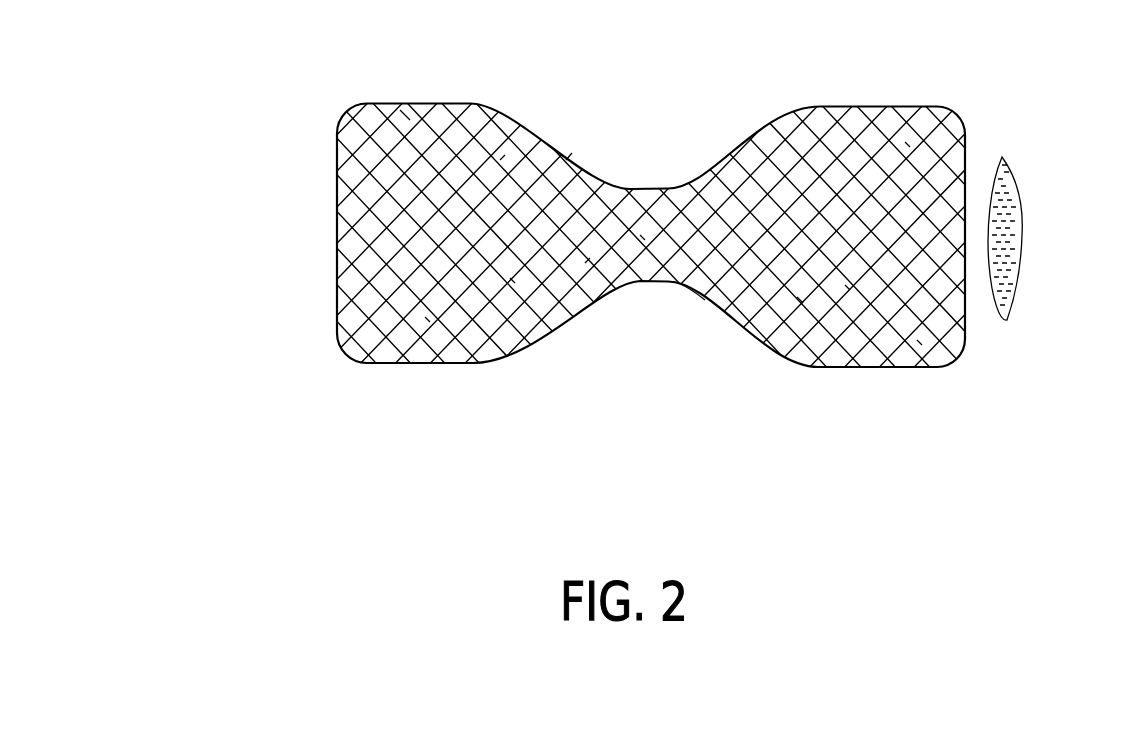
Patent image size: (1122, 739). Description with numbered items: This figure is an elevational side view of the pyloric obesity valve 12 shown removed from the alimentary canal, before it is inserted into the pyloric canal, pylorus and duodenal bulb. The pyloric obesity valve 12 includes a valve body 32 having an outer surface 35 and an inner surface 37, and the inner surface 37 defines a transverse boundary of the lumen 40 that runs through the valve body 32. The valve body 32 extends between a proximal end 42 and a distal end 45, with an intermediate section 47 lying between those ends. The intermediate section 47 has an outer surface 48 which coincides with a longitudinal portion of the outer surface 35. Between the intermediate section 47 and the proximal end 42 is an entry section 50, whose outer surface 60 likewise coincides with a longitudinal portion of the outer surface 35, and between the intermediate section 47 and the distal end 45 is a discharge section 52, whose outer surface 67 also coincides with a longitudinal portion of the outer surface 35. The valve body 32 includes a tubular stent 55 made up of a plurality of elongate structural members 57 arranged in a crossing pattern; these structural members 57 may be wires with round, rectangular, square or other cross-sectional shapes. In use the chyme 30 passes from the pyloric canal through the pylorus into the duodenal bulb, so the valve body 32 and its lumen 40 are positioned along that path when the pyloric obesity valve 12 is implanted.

The pyloric obesity valve 12 is at (755, 132).
The chyme 30 is at (1007, 233).
The valve body 32 is at (574, 150).
The outer surface 35 is at (430, 325).
The inner surface 37 is at (337, 190).
The lumen 40 is at (337, 240).
The proximal end 42 is at (967, 155).
The distal end 45 is at (337, 307).
The intermediate section 47 is at (641, 230).
The outer surface of intermediate section 48 is at (697, 292).
The entry section 50 is at (904, 138).
The discharge section 52 is at (508, 150).
The tubular stent 55 is at (583, 265).
The elongate structural members 57 is at (850, 290).
The outer surface of entry section 60 is at (922, 345).
The outer surface of discharge section 67 is at (410, 120).